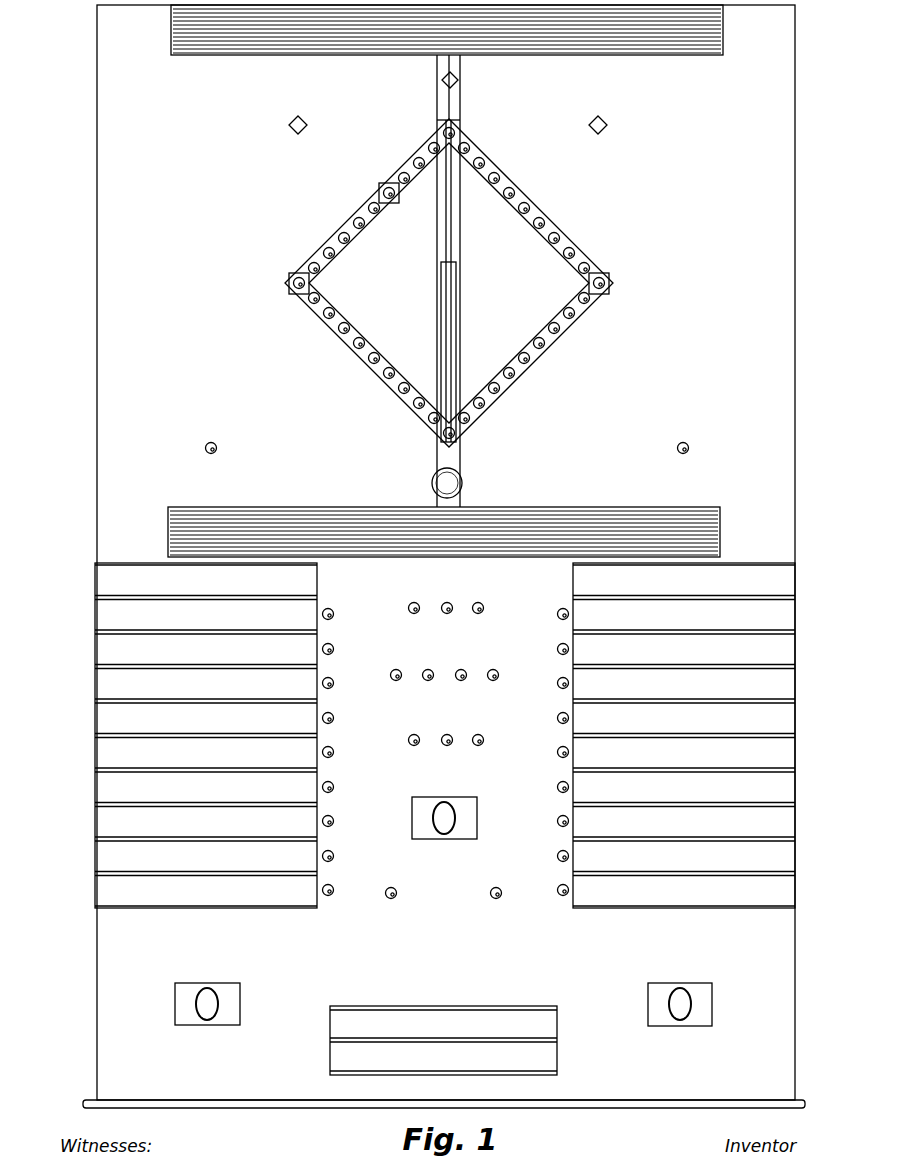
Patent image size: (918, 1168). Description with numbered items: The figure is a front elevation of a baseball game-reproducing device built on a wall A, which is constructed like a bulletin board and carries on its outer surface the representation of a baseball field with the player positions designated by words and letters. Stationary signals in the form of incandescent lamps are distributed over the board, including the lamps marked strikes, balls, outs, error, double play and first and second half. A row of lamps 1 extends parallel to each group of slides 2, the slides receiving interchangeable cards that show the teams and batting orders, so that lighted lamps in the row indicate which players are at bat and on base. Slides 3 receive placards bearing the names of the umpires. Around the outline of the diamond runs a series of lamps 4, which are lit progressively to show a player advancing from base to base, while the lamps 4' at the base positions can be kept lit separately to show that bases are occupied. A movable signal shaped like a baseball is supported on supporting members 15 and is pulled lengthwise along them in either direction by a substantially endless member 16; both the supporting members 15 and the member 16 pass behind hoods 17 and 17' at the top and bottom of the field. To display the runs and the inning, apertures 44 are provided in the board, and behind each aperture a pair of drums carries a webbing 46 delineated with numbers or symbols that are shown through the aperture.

The wall A is at (112, 283).
The row of lamps 1 is at (332, 893).
The slides 2 is at (100, 722).
The slides 3 is at (338, 1027).
The series of lamps 4 is at (449, 283).
The lamps 4' is at (444, 283).
The supporting members 15 is at (460, 197).
The member 16 is at (448, 361).
The hood 17 is at (447, 50).
The hood 17' is at (444, 515).
The apertures 44 is at (412, 822).
The webbing 46 is at (467, 823).